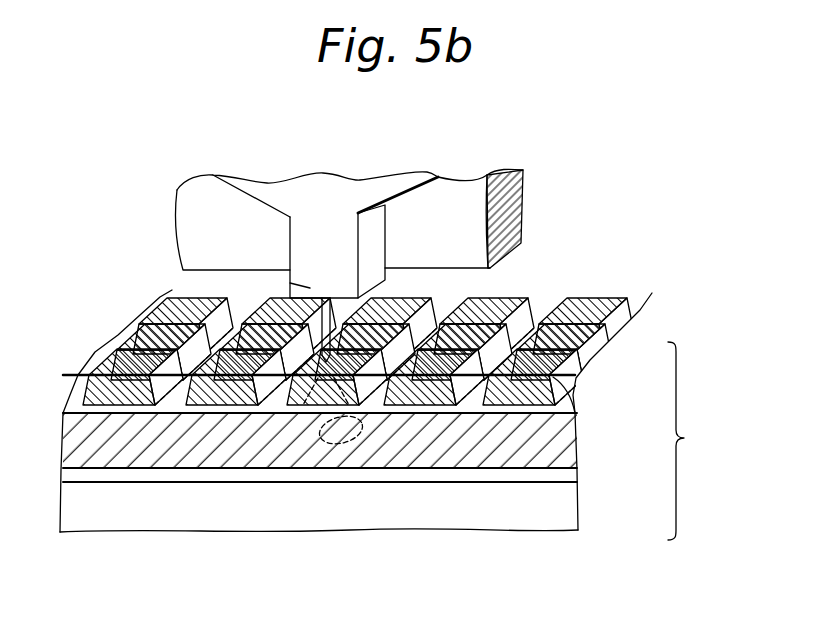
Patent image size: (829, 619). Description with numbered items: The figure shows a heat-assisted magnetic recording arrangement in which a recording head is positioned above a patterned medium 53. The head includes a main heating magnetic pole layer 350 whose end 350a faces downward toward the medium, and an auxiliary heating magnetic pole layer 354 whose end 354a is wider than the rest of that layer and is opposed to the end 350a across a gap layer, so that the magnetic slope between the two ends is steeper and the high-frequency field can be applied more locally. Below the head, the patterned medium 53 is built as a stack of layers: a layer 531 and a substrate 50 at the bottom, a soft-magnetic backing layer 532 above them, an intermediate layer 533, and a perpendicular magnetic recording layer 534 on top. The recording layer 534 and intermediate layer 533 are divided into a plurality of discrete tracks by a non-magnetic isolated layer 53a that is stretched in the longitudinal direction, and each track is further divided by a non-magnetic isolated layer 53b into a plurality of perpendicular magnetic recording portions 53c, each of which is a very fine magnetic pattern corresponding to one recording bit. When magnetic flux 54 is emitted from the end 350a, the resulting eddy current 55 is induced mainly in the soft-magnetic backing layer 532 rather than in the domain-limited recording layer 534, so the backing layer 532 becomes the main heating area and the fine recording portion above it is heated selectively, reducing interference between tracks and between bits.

The main heating magnetic pole layer 350 is at (283, 230).
The end of the main heating magnetic pole layer 350a is at (290, 283).
The auxiliary heating magnetic pole layer 354 is at (440, 214).
The end of the auxiliary heating magnetic pole layer 354a is at (505, 235).
The patterned medium 53 is at (696, 441).
The non-magnetic isolated layer 53a is at (527, 318).
The non-magnetic isolated layer 53b is at (548, 330).
The perpendicular magnetic recording portion 53c is at (458, 312).
The perpendicular magnetic recording layer 534 is at (570, 370).
The intermediate layer 533 is at (527, 408).
The soft-magnetic backing layer 532 is at (550, 443).
The base layer 531 is at (550, 473).
The substrate 50 is at (543, 512).
The magnetic flux 54 is at (305, 383).
The eddy current 55 is at (343, 442).